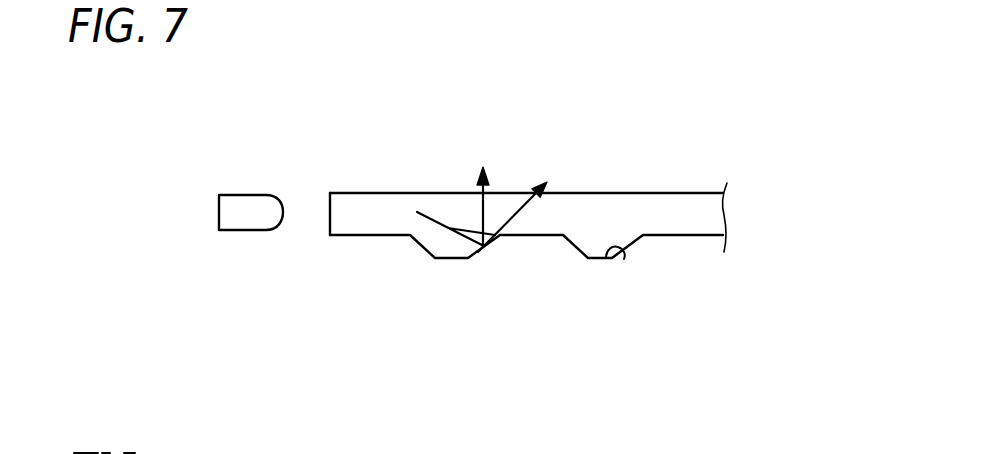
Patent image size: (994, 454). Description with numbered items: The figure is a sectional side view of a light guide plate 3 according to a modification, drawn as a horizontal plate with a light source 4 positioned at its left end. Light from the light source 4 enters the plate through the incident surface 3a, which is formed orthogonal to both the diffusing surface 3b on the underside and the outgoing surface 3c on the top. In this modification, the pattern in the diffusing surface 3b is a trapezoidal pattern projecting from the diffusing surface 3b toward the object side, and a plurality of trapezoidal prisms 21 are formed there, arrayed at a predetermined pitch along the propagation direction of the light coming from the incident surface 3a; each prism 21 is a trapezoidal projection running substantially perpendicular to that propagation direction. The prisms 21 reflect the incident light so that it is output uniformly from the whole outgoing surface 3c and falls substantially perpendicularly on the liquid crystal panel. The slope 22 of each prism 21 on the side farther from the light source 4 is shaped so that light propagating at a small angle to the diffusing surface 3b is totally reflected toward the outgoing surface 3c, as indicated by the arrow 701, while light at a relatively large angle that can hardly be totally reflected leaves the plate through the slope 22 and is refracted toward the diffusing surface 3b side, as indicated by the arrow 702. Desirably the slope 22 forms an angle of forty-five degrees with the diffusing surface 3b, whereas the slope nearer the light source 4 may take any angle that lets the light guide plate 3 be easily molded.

The light guide plate 3 is at (546, 252).
The incident surface 3a is at (330, 216).
The diffusing surface 3b is at (703, 236).
The outgoing surface 3c is at (705, 193).
The light source 4 is at (250, 195).
The trapezoidal prism 21 is at (455, 260).
The slope 22 is at (605, 258).
The arrow 701 is at (490, 178).
The arrow 702 is at (532, 187).